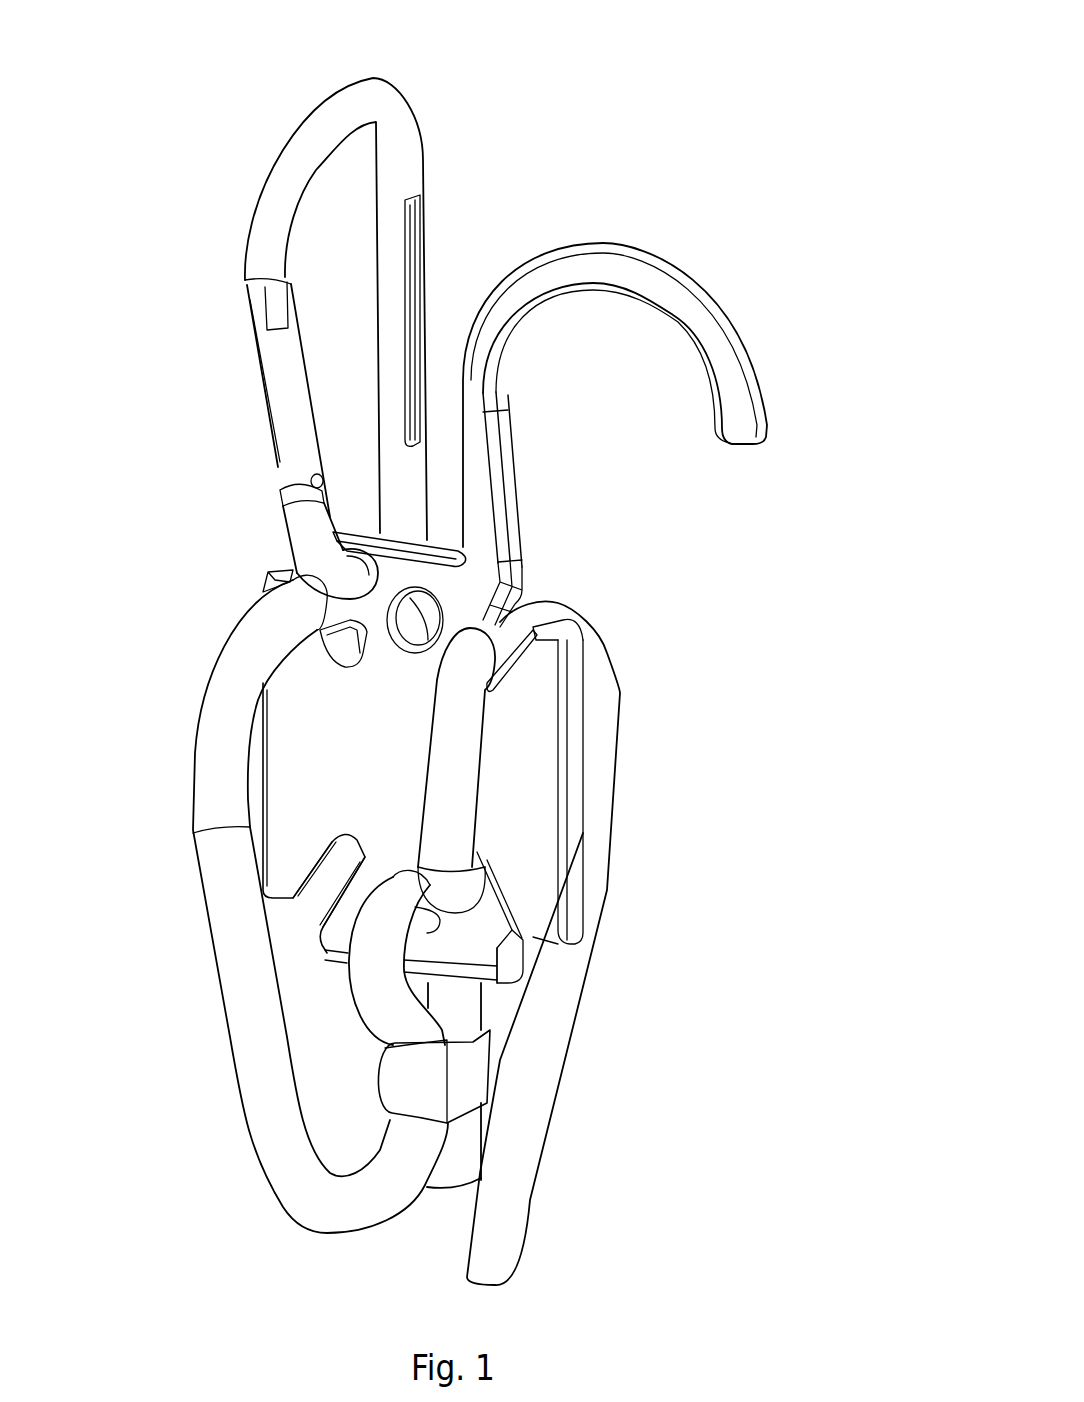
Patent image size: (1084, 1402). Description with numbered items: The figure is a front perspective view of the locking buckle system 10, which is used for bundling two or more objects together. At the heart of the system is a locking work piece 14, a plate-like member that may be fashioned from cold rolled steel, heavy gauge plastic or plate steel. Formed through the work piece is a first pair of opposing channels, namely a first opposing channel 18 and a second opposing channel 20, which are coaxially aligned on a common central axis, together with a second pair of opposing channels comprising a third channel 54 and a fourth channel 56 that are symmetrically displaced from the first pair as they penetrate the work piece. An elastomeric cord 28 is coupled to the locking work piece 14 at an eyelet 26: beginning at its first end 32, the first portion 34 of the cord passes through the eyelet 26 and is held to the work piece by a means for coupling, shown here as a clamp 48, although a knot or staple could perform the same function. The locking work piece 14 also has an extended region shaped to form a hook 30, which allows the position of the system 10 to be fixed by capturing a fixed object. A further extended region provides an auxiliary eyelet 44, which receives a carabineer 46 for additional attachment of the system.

The system 10 is at (613, 192).
The locking work piece 14 is at (340, 746).
The first opposing channel 18 is at (290, 553).
The second opposing channel 20 is at (533, 947).
The eyelet 26 is at (393, 873).
The elastomeric cord 28 is at (237, 952).
The hook 30 is at (742, 316).
The first end 32 is at (448, 1187).
The first portion 34 is at (465, 995).
The auxiliary eyelet 44 is at (377, 613).
The carabineer 46 is at (400, 122).
The clamp 48 is at (385, 1088).
The third channel 54 is at (553, 597).
The fourth channel 56 is at (302, 932).